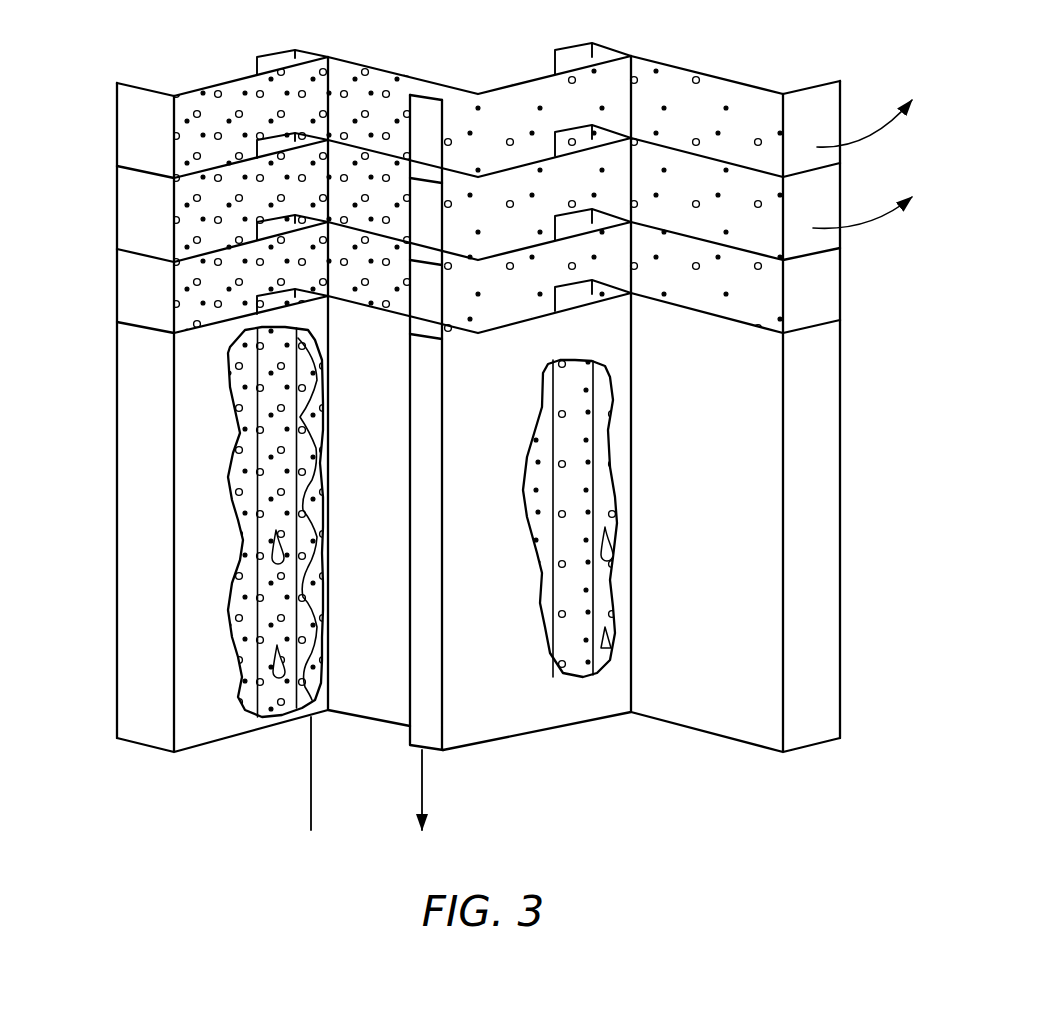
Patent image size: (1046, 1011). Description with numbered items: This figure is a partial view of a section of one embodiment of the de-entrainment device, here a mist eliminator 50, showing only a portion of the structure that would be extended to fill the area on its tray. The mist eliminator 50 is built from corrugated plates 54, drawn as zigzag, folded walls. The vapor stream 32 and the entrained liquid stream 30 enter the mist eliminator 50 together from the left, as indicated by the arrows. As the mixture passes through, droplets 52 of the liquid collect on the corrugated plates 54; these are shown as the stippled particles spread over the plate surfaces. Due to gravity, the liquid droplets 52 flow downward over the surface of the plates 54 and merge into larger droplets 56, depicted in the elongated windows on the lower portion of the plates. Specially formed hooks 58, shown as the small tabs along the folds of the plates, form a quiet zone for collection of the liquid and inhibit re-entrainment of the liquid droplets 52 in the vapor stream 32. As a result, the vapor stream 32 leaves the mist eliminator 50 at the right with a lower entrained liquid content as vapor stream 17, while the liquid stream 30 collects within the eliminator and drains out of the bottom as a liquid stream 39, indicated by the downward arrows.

The vapor stream 17 is at (868, 218).
The entrained liquid stream 30 is at (143, 217).
The vapor stream 32 is at (137, 290).
The liquid stream 39 is at (422, 788).
The mist eliminator 50 is at (97, 440).
The droplets 52 is at (240, 127).
The corrugated plates 54 is at (528, 78).
The larger droplets 56 is at (276, 670).
The hooks 58 is at (578, 43).